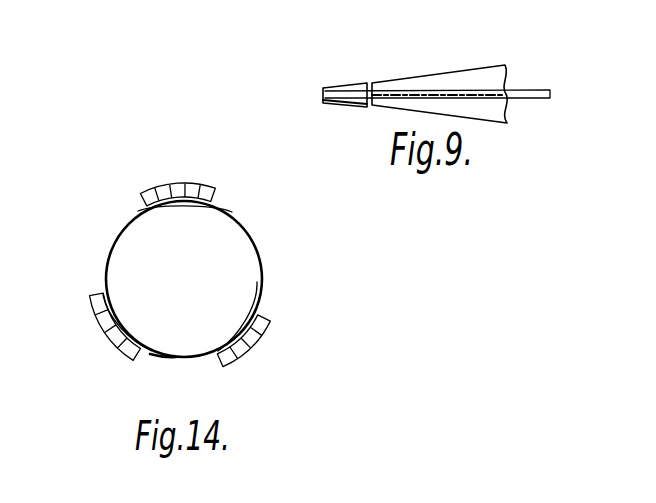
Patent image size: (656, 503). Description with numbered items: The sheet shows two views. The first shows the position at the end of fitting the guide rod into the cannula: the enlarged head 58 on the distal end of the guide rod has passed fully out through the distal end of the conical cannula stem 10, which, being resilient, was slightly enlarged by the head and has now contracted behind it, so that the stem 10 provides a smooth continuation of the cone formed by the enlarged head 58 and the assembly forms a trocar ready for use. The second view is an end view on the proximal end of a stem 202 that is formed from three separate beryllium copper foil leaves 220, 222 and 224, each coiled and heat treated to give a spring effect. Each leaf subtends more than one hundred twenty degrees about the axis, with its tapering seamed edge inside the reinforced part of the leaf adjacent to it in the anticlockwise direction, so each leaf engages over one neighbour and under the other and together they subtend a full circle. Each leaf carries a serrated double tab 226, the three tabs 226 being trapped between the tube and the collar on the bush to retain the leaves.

In FIG. 9, the conical cannula stem 10 is at (462, 70).
In FIG. 9, the enlarged head 58 is at (347, 93).
In FIG. 14, the stem 202 is at (183, 268).
In FIG. 14, the metal foil leaf 220 is at (107, 271).
In FIG. 14, the metal foil leaf 222 is at (255, 240).
In FIG. 14, the metal foil leaf 224 is at (160, 359).
In FIG. 14, the serrated double tab 226 is at (188, 192).